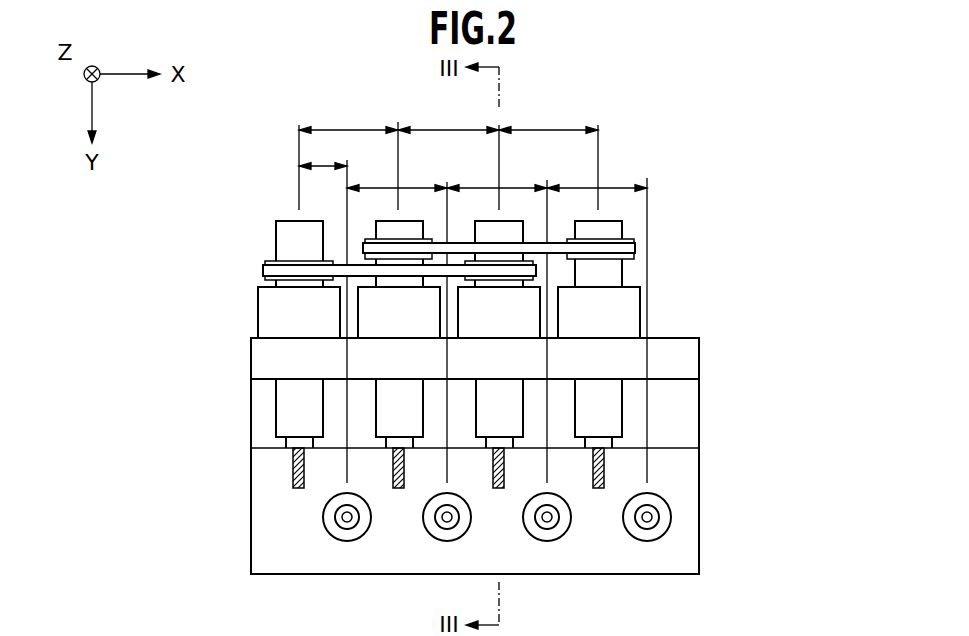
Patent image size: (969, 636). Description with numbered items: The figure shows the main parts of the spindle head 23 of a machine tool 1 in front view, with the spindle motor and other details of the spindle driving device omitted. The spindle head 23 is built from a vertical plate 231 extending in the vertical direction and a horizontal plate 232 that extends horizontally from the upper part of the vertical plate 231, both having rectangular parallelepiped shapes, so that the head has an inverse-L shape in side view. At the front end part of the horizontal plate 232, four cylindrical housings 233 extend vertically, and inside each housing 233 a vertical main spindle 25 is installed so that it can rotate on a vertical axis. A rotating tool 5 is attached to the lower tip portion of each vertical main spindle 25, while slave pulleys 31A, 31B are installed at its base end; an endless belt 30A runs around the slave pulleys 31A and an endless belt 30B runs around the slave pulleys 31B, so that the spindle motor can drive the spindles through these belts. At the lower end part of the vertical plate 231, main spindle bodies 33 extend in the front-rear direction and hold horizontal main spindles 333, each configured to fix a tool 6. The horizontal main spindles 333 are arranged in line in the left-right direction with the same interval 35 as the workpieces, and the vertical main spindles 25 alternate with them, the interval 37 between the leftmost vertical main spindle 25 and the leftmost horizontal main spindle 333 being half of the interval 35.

The injection molding apparatus 1 is at (746, 128).
The tool 5 is at (293, 475).
The tool 6 is at (347, 522).
The spindle head 23 is at (544, 450).
The vertical plate 231 is at (515, 476).
The horizontal plate 232 is at (700, 348).
The housing 233 is at (258, 312).
The vertical main spindle 25 is at (276, 410).
The endless belt 30A is at (555, 251).
The endless belt 30B is at (340, 270).
The slave pulley 31A is at (395, 345).
The slave pulley 31B is at (490, 347).
The main spindle body 33 is at (326, 536).
The horizontal main spindle 333 is at (326, 504).
The interval 35 is at (350, 128).
The interval 37 is at (325, 162).